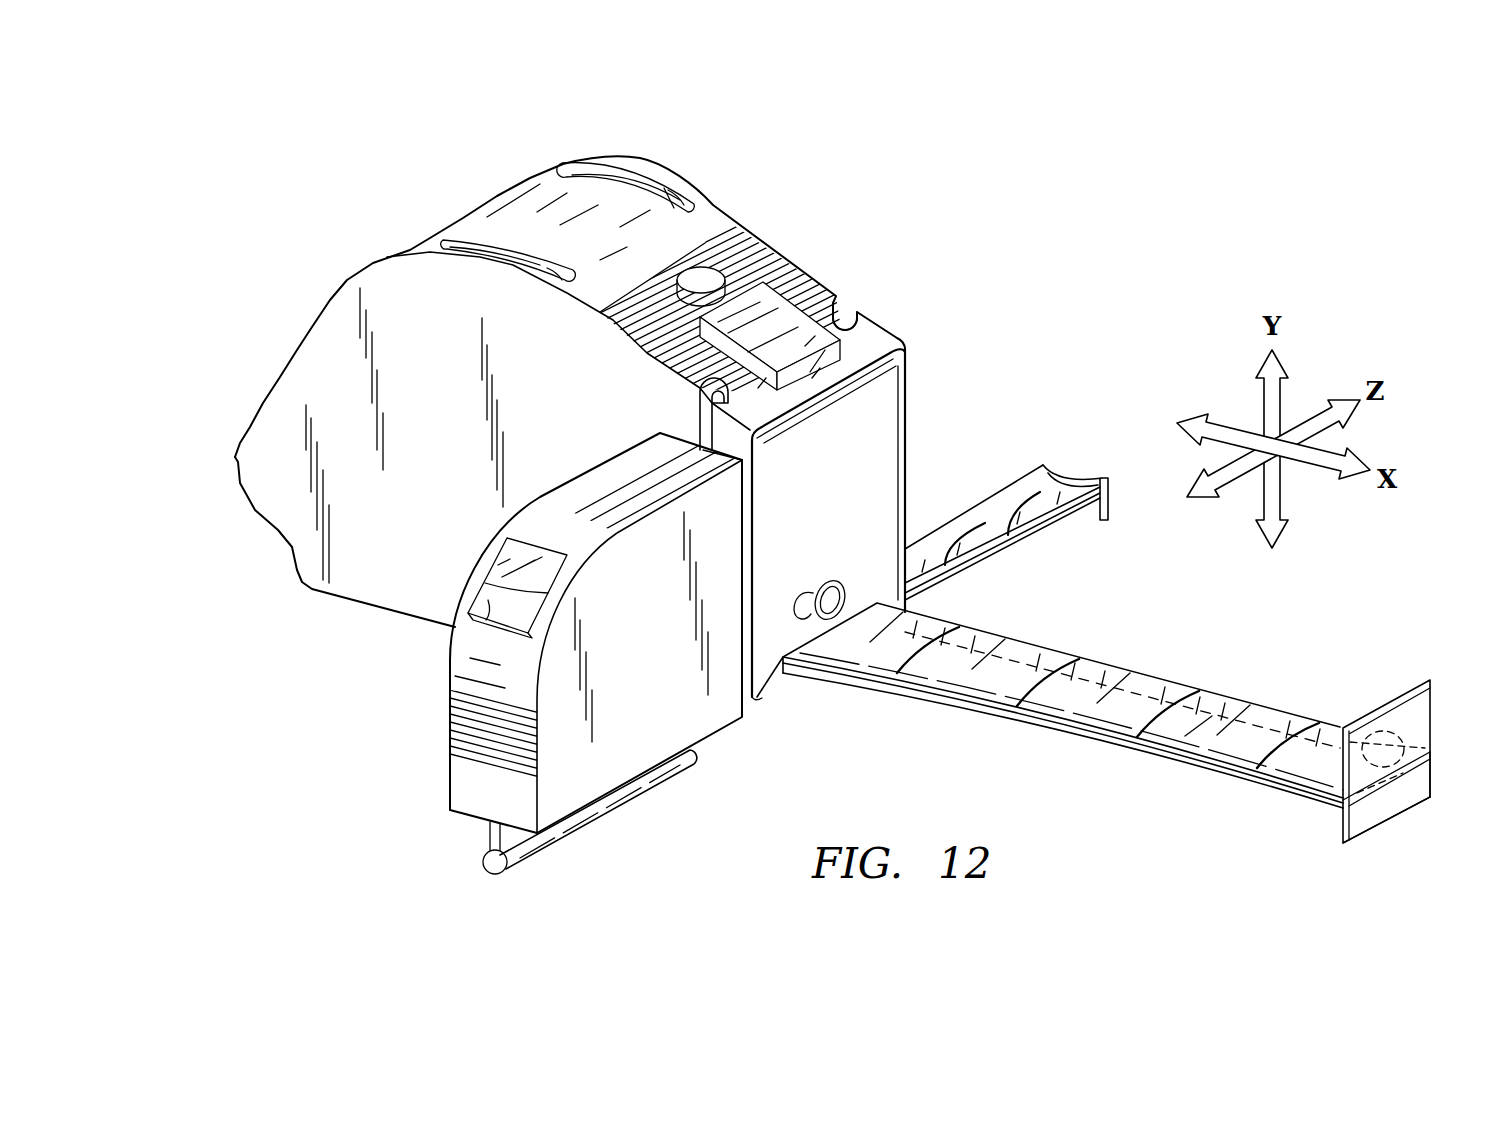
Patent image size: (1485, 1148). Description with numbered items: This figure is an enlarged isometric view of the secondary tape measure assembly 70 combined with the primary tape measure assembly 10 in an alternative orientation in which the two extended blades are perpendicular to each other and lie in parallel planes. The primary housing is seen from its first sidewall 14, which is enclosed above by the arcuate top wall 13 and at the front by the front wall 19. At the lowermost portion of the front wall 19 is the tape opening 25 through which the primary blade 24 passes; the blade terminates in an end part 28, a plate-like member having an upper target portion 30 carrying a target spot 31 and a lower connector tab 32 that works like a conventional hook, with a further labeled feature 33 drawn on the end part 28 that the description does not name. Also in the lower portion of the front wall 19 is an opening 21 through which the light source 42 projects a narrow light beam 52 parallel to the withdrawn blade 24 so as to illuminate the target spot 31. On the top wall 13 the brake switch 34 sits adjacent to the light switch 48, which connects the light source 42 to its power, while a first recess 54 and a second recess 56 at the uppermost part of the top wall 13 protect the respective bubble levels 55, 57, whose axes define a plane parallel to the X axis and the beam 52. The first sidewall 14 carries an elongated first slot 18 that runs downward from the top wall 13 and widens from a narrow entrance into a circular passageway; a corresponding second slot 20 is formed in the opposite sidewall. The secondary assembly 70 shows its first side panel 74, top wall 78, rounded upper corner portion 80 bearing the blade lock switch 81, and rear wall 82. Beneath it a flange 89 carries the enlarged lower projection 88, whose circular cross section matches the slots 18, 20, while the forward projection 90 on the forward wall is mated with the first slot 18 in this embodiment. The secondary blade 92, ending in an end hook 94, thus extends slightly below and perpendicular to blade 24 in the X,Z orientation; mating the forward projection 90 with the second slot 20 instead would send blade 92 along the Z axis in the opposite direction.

The primary tape measure assembly 10 is at (316, 250).
The arcuate top wall 13 is at (580, 222).
The first sidewall 14 is at (414, 342).
The first slot 18 is at (698, 403).
The front wall 19 is at (824, 461).
The second slot 20 is at (848, 316).
The opening 21 is at (797, 610).
The primary blade 24 is at (1140, 697).
The tape opening 25 is at (775, 688).
The end part 28 is at (1340, 710).
The upper target portion 30 is at (1414, 707).
The target spot 31 is at (1363, 762).
The lower connector tab 32 is at (1372, 817).
The hook edge 33 is at (1414, 767).
The brake switch 34 is at (750, 298).
The light source 42 is at (841, 590).
The light switch 48 is at (698, 275).
The light beam 52 is at (1207, 705).
The first recess 54 is at (485, 243).
The bubble level 55 is at (536, 273).
The second recess 56 is at (613, 174).
The bubble level 57 is at (662, 196).
The secondary tape measure assembly 70 is at (425, 692).
The first side panel 74 is at (667, 700).
The top wall 78 is at (592, 483).
The rounded upper corner portion 80 is at (478, 580).
The blade lock switch 81 is at (490, 608).
The rear wall 82 is at (463, 761).
The lower projection 88 is at (586, 822).
The flange 89 is at (484, 864).
The forward projection 90 is at (706, 440).
The secondary blade 92 is at (1010, 499).
The end hook 94 is at (1087, 513).